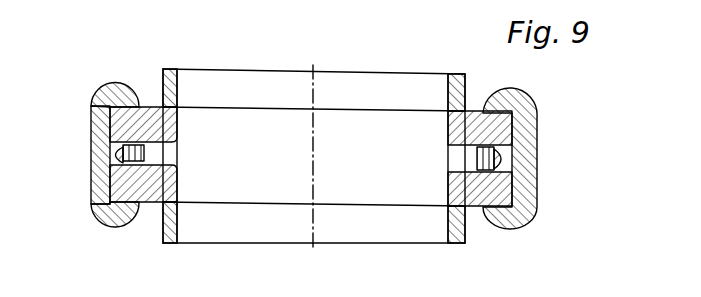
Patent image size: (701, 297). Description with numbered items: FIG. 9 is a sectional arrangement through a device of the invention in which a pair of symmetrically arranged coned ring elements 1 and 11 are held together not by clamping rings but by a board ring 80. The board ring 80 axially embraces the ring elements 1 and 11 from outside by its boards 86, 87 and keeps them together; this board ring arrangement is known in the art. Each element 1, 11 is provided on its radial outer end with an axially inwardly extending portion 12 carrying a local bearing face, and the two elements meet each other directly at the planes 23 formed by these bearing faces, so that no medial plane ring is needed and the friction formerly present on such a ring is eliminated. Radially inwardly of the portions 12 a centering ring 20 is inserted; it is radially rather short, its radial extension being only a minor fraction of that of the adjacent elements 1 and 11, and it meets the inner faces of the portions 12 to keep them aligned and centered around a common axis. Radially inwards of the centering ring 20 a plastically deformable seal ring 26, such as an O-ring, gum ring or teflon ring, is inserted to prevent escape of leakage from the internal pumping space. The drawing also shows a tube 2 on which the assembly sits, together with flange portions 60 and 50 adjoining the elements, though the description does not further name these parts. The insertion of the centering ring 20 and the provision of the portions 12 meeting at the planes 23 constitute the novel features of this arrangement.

The element 1 is at (495, 145).
The tube 2 is at (176, 83).
The element 11 is at (497, 183).
The axially inwardly extending portion 12 is at (100, 112).
The centering ring 20 is at (498, 152).
The bearings 23 is at (112, 157).
The seal ring 26 is at (146, 149).
The lower flange 50 is at (170, 158).
The flange 60 is at (177, 121).
The board ring 80 is at (90, 158).
The board 86 is at (128, 213).
The board 87 is at (134, 94).